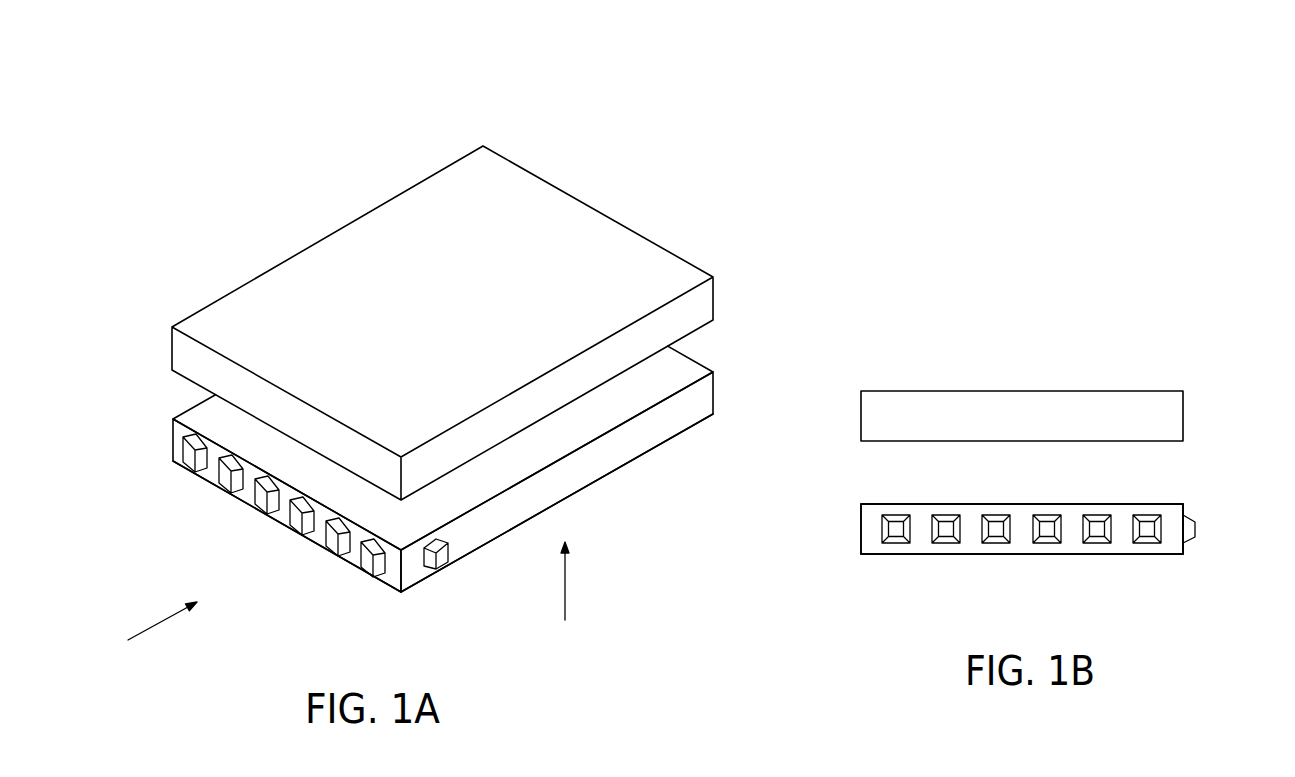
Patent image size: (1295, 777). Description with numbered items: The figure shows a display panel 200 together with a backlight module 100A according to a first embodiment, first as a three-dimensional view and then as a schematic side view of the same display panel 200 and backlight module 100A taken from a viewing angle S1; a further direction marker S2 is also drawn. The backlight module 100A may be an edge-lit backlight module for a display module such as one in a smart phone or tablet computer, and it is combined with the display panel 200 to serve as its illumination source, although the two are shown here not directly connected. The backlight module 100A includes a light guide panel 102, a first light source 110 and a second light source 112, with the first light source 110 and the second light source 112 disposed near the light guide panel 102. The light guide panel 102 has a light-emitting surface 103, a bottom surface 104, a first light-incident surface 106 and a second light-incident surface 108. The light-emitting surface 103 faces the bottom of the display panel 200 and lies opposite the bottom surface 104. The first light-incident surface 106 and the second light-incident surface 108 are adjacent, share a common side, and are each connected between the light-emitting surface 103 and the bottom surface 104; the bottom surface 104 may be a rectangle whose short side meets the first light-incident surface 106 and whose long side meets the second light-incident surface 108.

In FIG. 1A, the display panel 200 is at (547, 198).
In FIG. 1B, the display panel 200 is at (1012, 405).
In FIG. 1A, the backlight module 100A is at (453, 497).
In FIG. 1B, the backlight module 100A is at (1023, 546).
In FIG. 1A, the light guide panel 102 is at (450, 484).
In FIG. 1B, the light guide panel 102 is at (1023, 530).
In FIG. 1A, the light-emitting surface 103 is at (683, 370).
In FIG. 1B, the light-emitting surface 103 is at (869, 490).
In FIG. 1A, the bottom surface 104 is at (668, 462).
In FIG. 1B, the bottom surface 104 is at (869, 570).
In FIG. 1A, the first light-incident surface 106 is at (165, 432).
In FIG. 1B, the first light-incident surface 106 is at (1172, 507).
In FIG. 1A, the second light-incident surface 108 is at (414, 576).
In FIG. 1B, the second light-incident surface 108 is at (1193, 553).
In FIG. 1A, the first light source 110 is at (383, 594).
In FIG. 1B, the first light source 110 is at (1162, 566).
In FIG. 1A, the second light source 112 is at (441, 576).
In FIG. 1B, the second light source 112 is at (1206, 527).
In FIG. 1A, the viewing angle S1 is at (160, 617).
In FIG. 1A, the second direction S2 is at (565, 587).